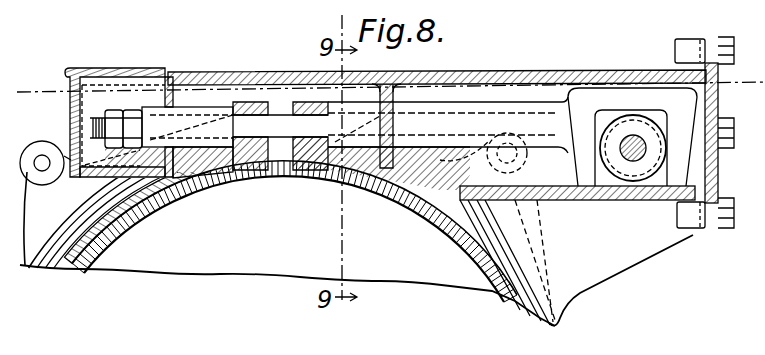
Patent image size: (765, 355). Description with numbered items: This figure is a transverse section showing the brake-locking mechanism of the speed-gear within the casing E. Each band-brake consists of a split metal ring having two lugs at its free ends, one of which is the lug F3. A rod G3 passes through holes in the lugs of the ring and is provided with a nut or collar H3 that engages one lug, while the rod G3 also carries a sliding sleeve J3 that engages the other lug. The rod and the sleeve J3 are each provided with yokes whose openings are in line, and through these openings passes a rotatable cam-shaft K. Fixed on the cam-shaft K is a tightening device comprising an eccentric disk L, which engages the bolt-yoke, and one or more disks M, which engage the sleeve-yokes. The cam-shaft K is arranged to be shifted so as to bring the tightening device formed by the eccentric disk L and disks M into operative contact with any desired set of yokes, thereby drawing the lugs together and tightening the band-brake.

The casing E is at (107, 228).
The nut or collar H3 is at (196, 118).
The lug F3 is at (253, 108).
The rod G3 is at (282, 125).
The sliding sleeve J3 is at (472, 118).
The disk M is at (631, 127).
The eccentric disk L is at (636, 186).
The cam-shaft K is at (596, 186).